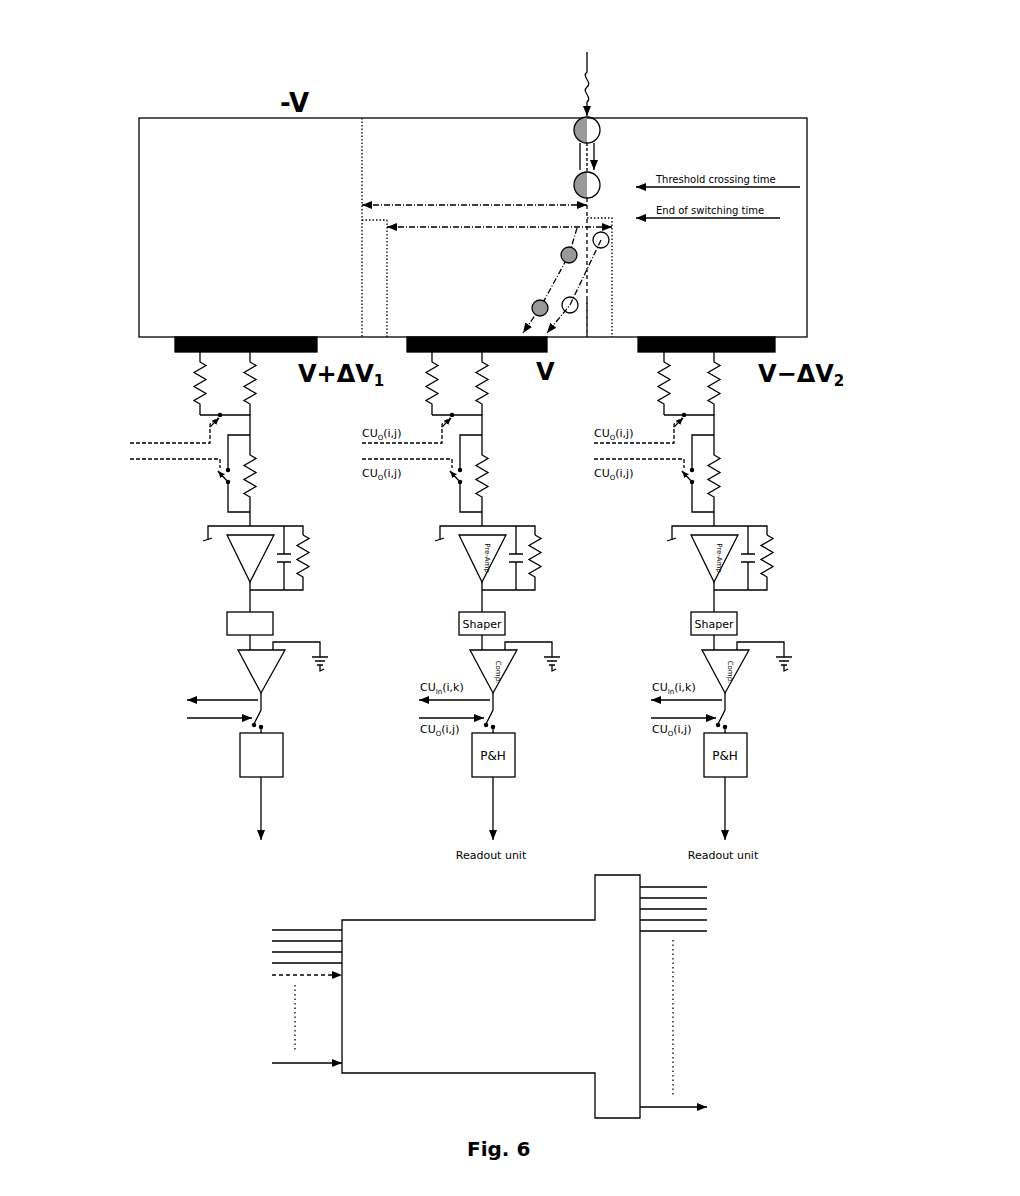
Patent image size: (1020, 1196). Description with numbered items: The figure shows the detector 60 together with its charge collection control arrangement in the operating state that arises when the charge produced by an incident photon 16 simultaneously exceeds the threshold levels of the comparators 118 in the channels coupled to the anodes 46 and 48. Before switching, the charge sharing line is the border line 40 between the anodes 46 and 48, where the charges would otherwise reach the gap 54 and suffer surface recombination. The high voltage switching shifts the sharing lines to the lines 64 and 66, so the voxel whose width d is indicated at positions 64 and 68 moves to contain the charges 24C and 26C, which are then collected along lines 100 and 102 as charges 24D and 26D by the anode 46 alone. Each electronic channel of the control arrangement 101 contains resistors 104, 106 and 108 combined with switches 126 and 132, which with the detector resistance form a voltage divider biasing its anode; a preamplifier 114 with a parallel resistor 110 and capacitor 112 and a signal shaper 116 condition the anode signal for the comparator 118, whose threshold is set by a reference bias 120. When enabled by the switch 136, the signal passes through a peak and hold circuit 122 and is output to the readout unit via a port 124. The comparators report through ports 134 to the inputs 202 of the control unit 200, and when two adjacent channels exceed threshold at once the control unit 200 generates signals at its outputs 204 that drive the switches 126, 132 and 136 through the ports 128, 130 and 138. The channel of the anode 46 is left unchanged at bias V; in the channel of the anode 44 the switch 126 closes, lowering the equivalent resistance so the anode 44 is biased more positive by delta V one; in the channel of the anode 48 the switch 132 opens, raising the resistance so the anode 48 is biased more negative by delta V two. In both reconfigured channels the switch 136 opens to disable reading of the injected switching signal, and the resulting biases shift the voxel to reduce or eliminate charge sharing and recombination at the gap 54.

The incident photon 16 is at (587, 60).
The charge 24C is at (561, 256).
The charge 24D is at (532, 308).
The charge 26C is at (610, 245).
The charge 26D is at (580, 297).
The border line 40 is at (597, 340).
The anode 44 is at (175, 352).
The anode 46 is at (393, 342).
The anode 48 is at (735, 347).
The gap 54 is at (590, 340).
The detector 60 is at (233, 118).
The charge sharing line 64 is at (387, 268).
The charge sharing line 66 is at (609, 238).
The width position 68 is at (463, 228).
The collection line 100 is at (560, 262).
The control unit 101 is at (201, 607).
The collection line 102 is at (590, 283).
The resistor 104 is at (146, 383).
The resistor 106 is at (288, 383).
The resistor 108 is at (280, 480).
The resistor 110 is at (313, 562).
The capacitor 112 is at (324, 563).
The preamplifier 114 is at (234, 569).
The signal shaper 116 is at (201, 629).
The comparator 118 is at (222, 671).
The reference bias 120 is at (332, 655).
The peak and hold circuit 122 is at (303, 757).
The port 124 is at (293, 819).
The switch 126 is at (179, 414).
The port 128 is at (136, 429).
The port 130 is at (143, 478).
The switch 132 is at (188, 493).
The port 134 is at (174, 688).
The switch 136 is at (296, 713).
The port 138 is at (205, 750).
The control unit 200 is at (420, 1073).
The inputs 202 is at (310, 1065).
The outputs 204 is at (680, 1108).